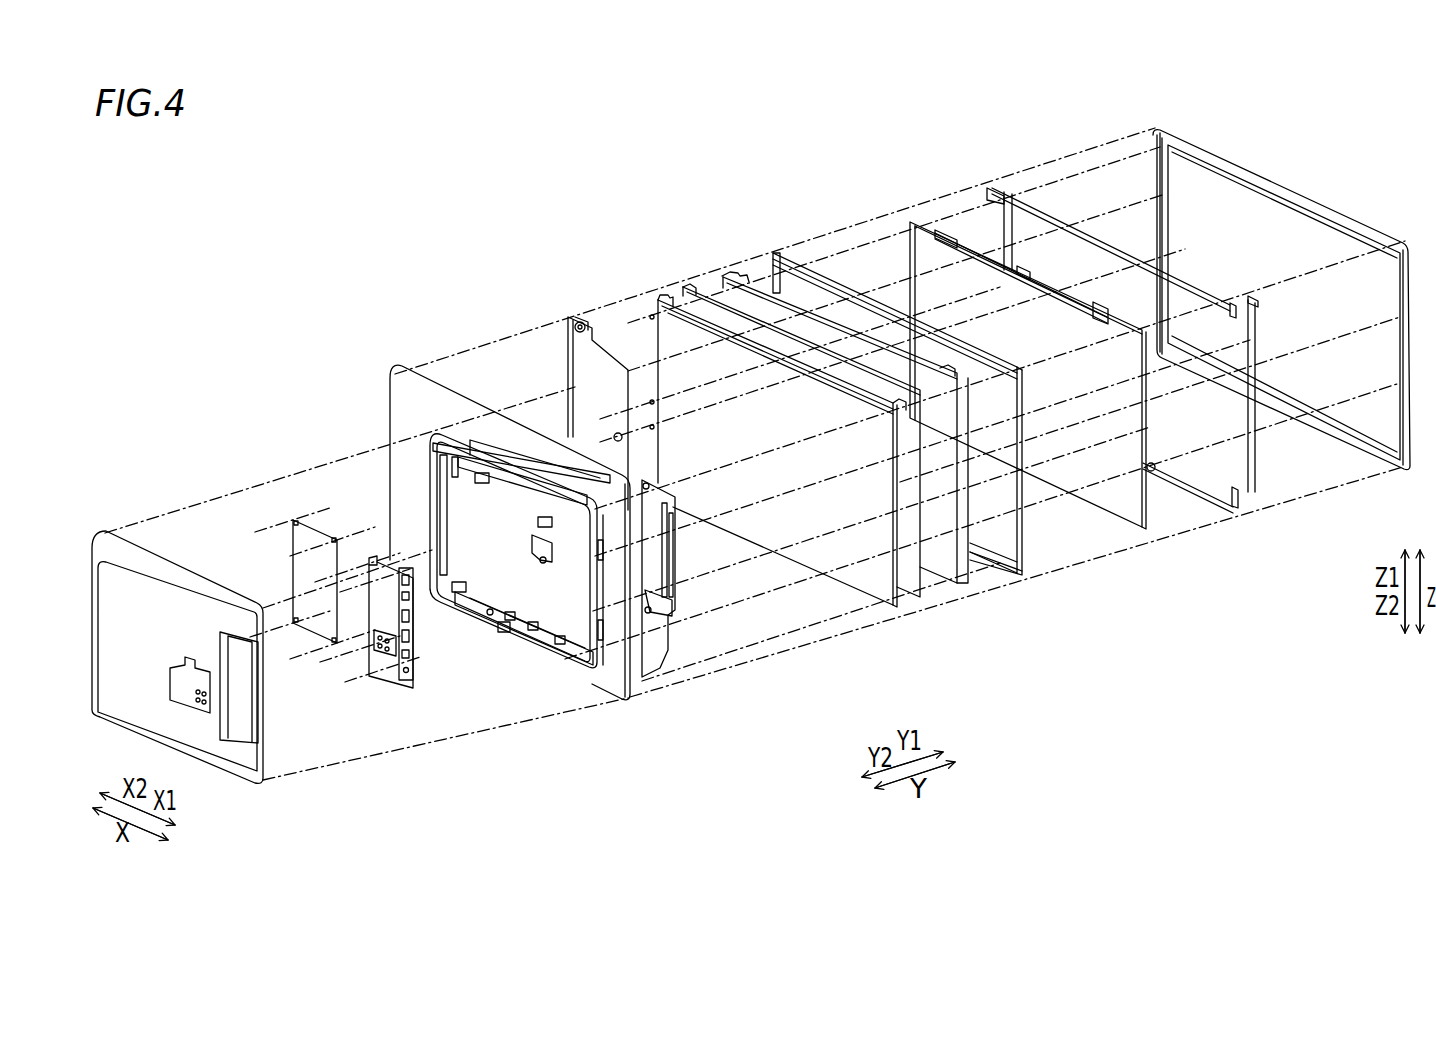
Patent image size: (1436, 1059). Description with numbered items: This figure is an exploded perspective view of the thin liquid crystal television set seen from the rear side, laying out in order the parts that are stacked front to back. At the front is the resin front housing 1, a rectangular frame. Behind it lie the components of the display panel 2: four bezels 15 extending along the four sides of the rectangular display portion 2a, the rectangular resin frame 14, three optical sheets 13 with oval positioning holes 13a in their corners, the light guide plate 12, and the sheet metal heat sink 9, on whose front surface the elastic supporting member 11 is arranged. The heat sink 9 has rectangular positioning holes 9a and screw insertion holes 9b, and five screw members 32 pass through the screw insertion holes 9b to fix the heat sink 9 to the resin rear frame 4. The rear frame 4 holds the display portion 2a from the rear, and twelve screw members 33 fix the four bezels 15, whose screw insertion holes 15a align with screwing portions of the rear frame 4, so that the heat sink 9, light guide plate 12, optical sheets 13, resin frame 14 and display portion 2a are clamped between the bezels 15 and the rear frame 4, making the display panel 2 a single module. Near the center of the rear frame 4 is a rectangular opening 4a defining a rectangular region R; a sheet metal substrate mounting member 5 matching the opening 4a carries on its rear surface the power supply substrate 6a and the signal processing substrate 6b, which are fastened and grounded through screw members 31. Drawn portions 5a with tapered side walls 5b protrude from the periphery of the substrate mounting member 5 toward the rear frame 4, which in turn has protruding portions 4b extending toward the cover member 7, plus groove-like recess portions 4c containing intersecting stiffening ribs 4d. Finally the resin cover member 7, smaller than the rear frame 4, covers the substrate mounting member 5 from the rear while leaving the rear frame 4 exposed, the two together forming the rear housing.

The front housing 1 is at (1287, 187).
The display panel 2 is at (588, 268).
The display portion 2a is at (1135, 512).
The rear frame 4 is at (402, 375).
The opening 4a is at (430, 462).
The protruding portions 4b is at (487, 482).
The groove-like recess portions 4c is at (462, 442).
The stiffening ribs 4d is at (476, 440).
The substrate mounting member 5 is at (660, 510).
The drawn portions 5a is at (538, 562).
The side wall 5b is at (545, 556).
The power supply substrate 6a is at (322, 540).
The signal processing substrate 6b is at (373, 563).
The cover member 7 is at (110, 545).
The heat sink 9 is at (570, 320).
The positioning holes 9a is at (580, 342).
The screw insertion holes 9b is at (577, 342).
The elastic supporting member 11 is at (653, 310).
The light guide plate 12 is at (663, 300).
The optical sheets 13 is at (745, 275).
The positioning holes 13a is at (937, 374).
The resin frame 14 is at (1005, 570).
The bezels 15 is at (1013, 262).
The screw insertion holes 15a is at (982, 197).
The screw members 31 is at (279, 523).
The screw members 32 is at (652, 317).
The screw members 33 is at (1060, 180).
The rectangular region R is at (520, 608).